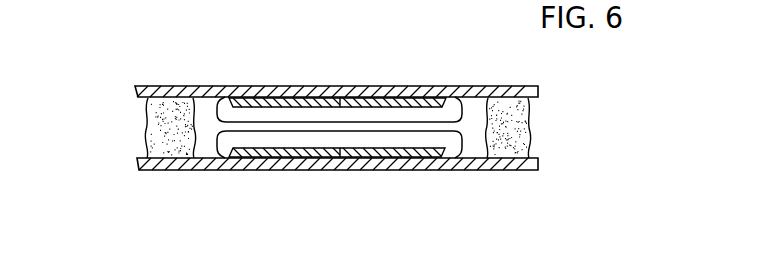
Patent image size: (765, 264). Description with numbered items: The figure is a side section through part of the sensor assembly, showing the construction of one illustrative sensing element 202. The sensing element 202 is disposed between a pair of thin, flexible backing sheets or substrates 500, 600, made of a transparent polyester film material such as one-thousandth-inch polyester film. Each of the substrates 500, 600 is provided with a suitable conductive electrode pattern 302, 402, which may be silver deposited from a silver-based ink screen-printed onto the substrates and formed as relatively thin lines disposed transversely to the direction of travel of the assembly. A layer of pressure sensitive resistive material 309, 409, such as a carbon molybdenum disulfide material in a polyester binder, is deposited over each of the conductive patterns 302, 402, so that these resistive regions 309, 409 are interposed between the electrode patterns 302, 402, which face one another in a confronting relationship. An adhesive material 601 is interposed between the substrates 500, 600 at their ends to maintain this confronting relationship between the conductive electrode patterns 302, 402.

The sensing element 202 is at (339, 78).
The conductive electrode pattern 302 is at (228, 104).
The pressure sensitive resistive material layer 309 is at (445, 110).
The conductive electrode pattern 402 is at (228, 156).
The pressure sensitive resistive material layer 409 is at (450, 147).
The upper substrate 500 is at (538, 91).
The lower substrate 600 is at (538, 164).
The adhesive material 601 is at (147, 131).